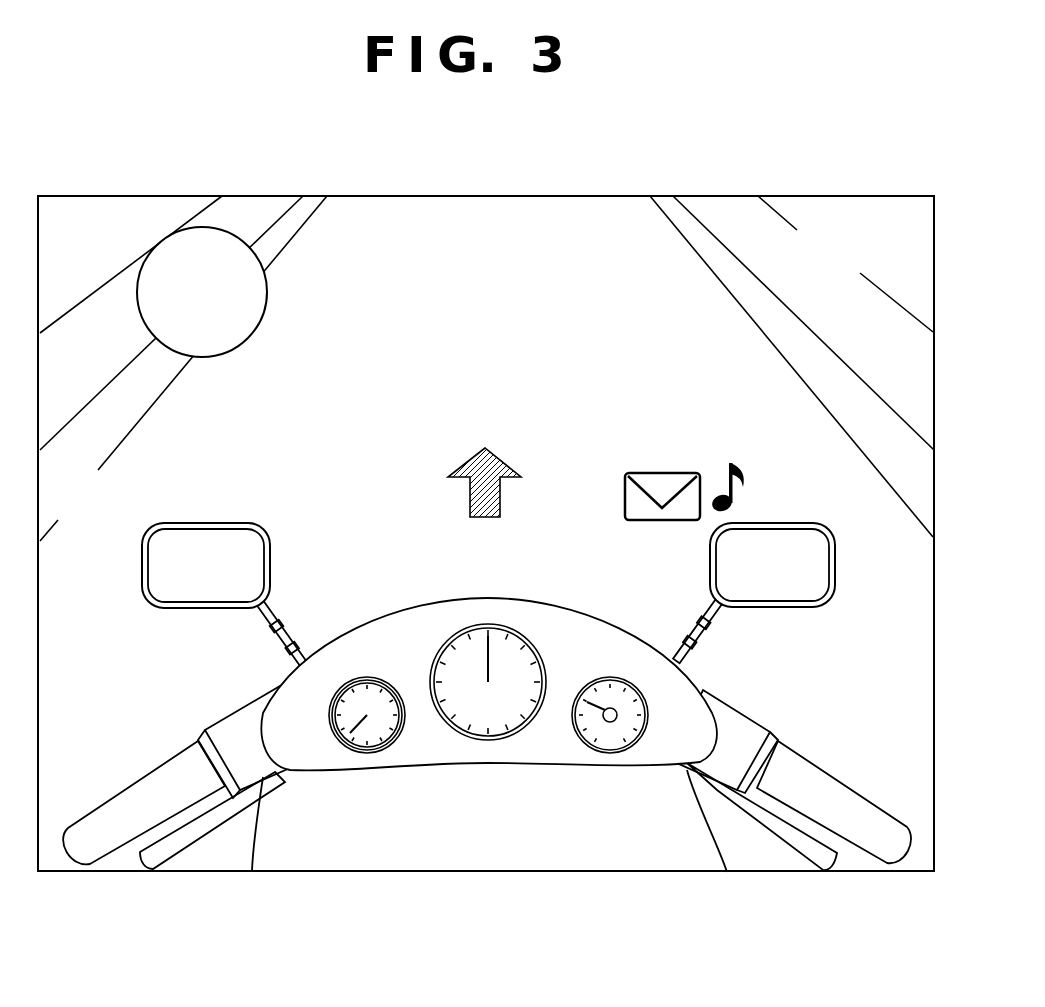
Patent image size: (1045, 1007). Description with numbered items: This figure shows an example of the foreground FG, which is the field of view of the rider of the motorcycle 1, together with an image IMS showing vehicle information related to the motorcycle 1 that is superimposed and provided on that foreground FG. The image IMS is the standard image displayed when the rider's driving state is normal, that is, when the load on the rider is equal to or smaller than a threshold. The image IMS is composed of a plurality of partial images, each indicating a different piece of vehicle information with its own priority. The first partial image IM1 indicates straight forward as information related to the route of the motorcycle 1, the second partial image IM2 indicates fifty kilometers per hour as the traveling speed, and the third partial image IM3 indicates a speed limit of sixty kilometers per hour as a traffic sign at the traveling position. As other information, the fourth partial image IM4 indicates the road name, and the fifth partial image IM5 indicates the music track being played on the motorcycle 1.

The motorcycle 1 is at (128, 749).
The foreground FG is at (128, 215).
The first partial image IM1 is at (458, 468).
The second partial image IM2 is at (155, 475).
The third partial image IM3 is at (140, 272).
The fourth partial image IM4 is at (522, 233).
The fifth partial image IM5 is at (788, 480).
The image IMS is at (486, 338).